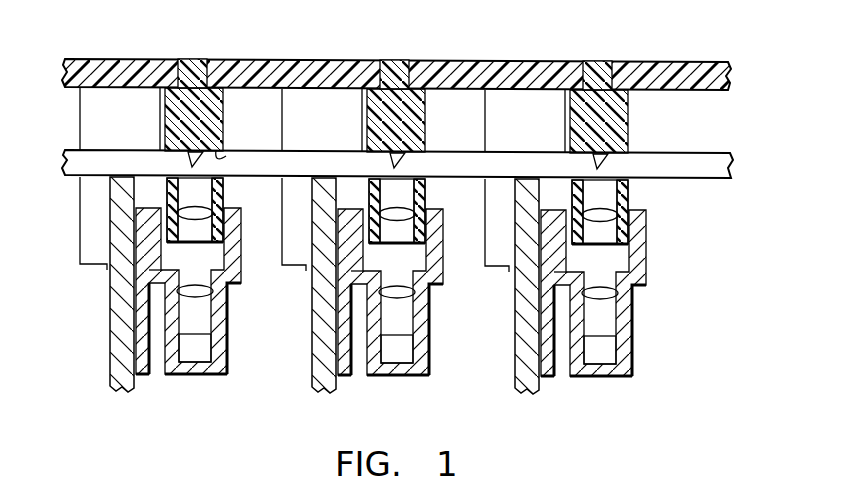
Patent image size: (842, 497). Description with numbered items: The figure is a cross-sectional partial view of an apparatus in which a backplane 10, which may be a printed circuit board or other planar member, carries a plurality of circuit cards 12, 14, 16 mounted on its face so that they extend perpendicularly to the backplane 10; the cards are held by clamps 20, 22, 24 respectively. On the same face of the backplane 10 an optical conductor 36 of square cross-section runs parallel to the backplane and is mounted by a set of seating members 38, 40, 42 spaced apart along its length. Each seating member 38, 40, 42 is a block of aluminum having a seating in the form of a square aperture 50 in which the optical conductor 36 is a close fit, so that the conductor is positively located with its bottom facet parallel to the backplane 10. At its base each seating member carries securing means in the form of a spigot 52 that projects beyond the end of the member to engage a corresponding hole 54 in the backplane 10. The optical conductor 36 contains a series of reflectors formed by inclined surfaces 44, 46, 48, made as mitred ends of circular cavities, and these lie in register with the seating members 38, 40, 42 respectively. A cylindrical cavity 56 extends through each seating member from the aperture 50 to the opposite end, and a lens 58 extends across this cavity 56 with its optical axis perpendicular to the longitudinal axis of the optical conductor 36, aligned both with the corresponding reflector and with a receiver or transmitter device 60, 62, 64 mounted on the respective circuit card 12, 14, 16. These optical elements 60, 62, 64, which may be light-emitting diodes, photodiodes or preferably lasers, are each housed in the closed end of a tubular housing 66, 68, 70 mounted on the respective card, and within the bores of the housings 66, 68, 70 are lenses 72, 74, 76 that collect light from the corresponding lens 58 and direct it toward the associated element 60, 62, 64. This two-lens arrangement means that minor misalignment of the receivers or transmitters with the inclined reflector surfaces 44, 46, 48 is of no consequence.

The backplane 10 is at (705, 62).
The circuit card 12 is at (107, 376).
The circuit card 14 is at (309, 378).
The circuit card 16 is at (512, 378).
The clamp 20 is at (86, 264).
The clamp 22 is at (290, 262).
The clamp 24 is at (493, 262).
The optical conductor 36 is at (665, 163).
The seating member 38 is at (226, 110).
The seating member 40 is at (430, 109).
The seating member 42 is at (631, 112).
The inclined surface 44 is at (196, 156).
The inclined surface 46 is at (396, 158).
The inclined surface 48 is at (604, 162).
The square aperture 50 is at (224, 152).
The spigot 52 is at (193, 70).
The hole 54 is at (187, 58).
The cylindrical cavity 56 is at (205, 194).
The lens 58 is at (205, 214).
The receiver or transmitter device 60 is at (195, 343).
The receiver or transmitter device 62 is at (397, 344).
The receiver or transmitter device 64 is at (600, 346).
The tubular housing 66 is at (227, 371).
The tubular housing 68 is at (427, 372).
The tubular housing 70 is at (632, 373).
The lens 72 is at (200, 293).
The lens 74 is at (402, 294).
The lens 76 is at (605, 294).